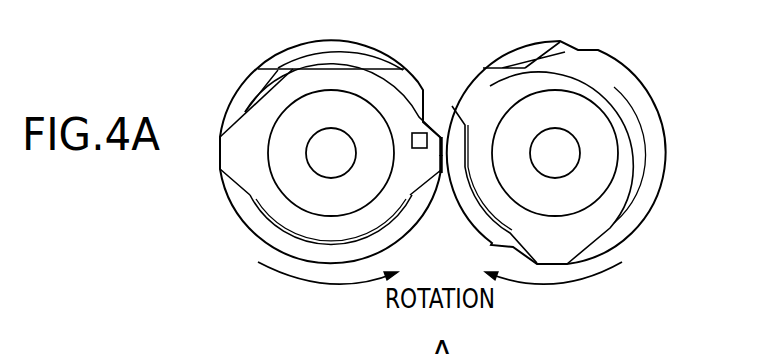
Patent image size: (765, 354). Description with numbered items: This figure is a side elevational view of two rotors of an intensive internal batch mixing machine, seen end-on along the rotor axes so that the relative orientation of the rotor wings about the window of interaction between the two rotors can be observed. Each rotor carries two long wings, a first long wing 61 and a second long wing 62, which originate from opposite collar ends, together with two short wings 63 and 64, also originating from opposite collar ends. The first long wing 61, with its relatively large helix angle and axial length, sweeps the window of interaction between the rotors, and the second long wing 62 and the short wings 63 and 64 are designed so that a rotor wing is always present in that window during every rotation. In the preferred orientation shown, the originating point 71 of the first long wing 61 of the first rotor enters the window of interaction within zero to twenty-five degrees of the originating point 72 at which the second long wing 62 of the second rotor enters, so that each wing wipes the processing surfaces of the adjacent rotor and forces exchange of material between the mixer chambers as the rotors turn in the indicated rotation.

The first long wing 61 is at (421, 130).
The second long wing 62 is at (492, 78).
The short wing 63 is at (232, 192).
The short wing 64 is at (387, 80).
The originating point of the first long wing 71 is at (442, 174).
The originating point of the second long wing 72 is at (445, 148).